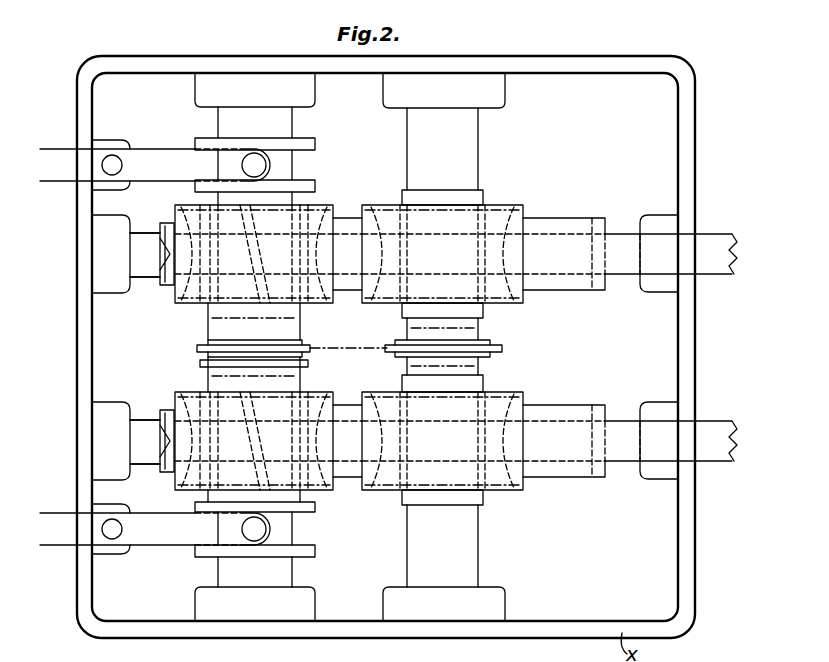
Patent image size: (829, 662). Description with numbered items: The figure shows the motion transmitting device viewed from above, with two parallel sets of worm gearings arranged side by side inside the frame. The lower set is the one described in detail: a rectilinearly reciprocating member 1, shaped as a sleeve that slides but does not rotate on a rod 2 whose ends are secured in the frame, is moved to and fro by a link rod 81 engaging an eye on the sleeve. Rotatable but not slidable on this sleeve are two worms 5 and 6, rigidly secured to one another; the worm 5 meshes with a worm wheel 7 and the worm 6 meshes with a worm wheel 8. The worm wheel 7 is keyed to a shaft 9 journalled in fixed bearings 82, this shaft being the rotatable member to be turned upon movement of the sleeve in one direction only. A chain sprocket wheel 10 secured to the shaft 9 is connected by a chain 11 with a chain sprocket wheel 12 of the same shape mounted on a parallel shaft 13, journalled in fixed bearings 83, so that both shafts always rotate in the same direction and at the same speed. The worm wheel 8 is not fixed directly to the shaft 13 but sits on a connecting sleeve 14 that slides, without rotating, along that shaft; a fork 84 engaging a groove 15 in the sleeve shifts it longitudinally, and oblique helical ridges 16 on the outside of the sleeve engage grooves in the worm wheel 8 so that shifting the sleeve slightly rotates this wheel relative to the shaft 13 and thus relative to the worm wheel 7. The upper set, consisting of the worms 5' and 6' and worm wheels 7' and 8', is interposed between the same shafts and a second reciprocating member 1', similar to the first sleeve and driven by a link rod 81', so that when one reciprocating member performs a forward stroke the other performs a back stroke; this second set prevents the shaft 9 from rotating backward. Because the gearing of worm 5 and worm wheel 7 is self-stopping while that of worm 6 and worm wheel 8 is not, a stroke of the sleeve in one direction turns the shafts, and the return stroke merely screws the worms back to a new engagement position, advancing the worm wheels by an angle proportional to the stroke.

The rectilinearly reciprocating member 1 is at (393, 464).
The reciprocating member 1' is at (393, 276).
The rod 2 is at (140, 420).
The worm 5 is at (457, 450).
The worm 5' is at (471, 213).
The worm 6 is at (278, 516).
The worm 6' is at (231, 321).
The worm wheel 7 is at (442, 458).
The worm wheel 7' is at (451, 237).
The worm wheel 8 is at (261, 457).
The worm wheel 8' is at (232, 245).
The shaft 9 is at (468, 548).
The chain sprocket wheel 10 is at (495, 352).
The chain 11 is at (356, 353).
The chain sprocket wheel 12 is at (305, 351).
The shaft 13 is at (288, 572).
The connecting sleeve 14 is at (208, 373).
The groove 15 is at (300, 533).
The oblique helical ridges 16 is at (250, 455).
The link rod 81 is at (671, 469).
The link rod 81' is at (674, 233).
The fixed bearings 82 is at (498, 98).
The fixed bearings 83 is at (313, 100).
The fork 84 is at (143, 540).